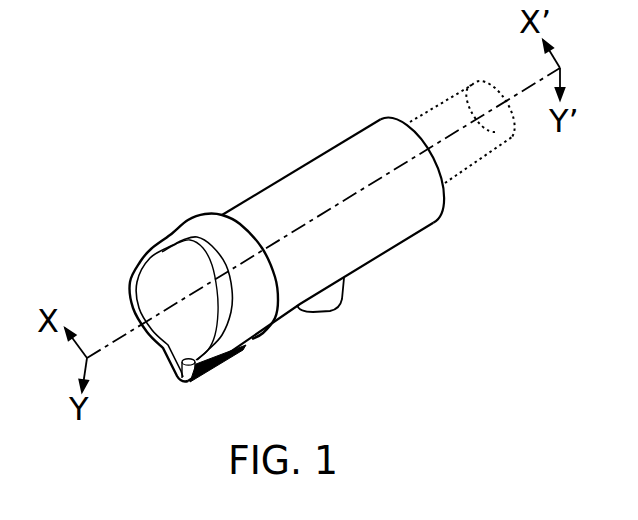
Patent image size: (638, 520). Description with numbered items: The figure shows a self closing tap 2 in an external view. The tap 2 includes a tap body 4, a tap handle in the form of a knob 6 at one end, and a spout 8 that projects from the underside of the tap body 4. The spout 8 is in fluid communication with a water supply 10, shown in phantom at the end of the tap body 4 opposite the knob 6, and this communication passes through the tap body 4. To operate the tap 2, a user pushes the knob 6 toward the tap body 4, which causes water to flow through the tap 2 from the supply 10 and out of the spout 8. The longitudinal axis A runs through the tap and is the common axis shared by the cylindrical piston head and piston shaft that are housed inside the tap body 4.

The self closing tap 2 is at (202, 66).
The tap body 4 is at (327, 148).
The knob 6 is at (133, 255).
The spout 8 is at (342, 303).
The water supply 10 is at (493, 153).
The longitudinal axis A is at (127, 337).